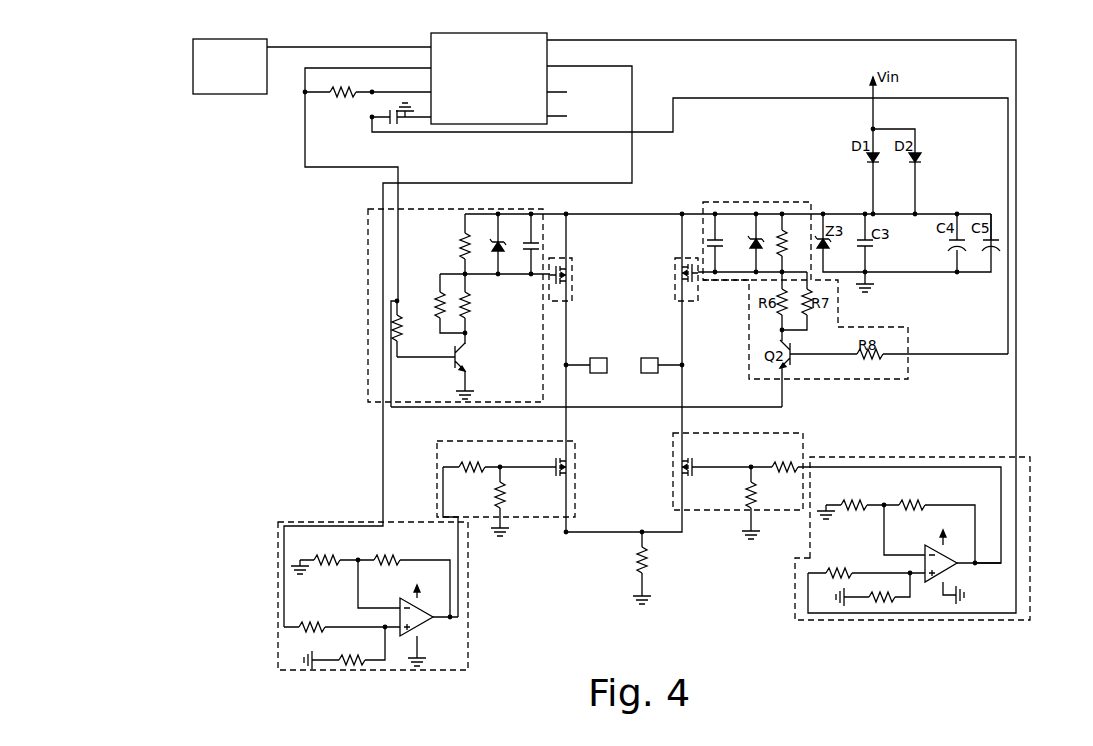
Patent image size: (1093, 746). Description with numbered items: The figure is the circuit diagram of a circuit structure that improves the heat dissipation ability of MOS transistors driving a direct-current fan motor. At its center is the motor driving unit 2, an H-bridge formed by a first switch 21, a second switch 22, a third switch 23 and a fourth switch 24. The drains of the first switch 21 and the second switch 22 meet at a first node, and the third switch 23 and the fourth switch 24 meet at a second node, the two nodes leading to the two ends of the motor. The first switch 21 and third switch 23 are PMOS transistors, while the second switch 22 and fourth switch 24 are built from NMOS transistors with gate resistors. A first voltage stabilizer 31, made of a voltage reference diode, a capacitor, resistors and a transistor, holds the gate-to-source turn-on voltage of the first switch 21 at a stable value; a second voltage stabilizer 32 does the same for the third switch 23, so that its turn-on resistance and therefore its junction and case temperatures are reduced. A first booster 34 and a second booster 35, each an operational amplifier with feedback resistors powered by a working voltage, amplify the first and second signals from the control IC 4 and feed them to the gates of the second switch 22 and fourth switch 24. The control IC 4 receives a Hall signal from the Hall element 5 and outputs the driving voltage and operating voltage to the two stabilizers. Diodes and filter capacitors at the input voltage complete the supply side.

The motor driving unit 2 is at (648, 199).
The control integrated circuit 4 is at (490, 33).
The Hall element 5 is at (193, 50).
The first switch 21 is at (572, 258).
The second switch 22 is at (580, 425).
The third switch 23 is at (675, 272).
The fourth switch 24 is at (672, 442).
The first voltage stabilizer 31 is at (368, 305).
The second voltage stabilizer 32 is at (757, 202).
The first booster 34 is at (278, 522).
The second booster 35 is at (1030, 457).